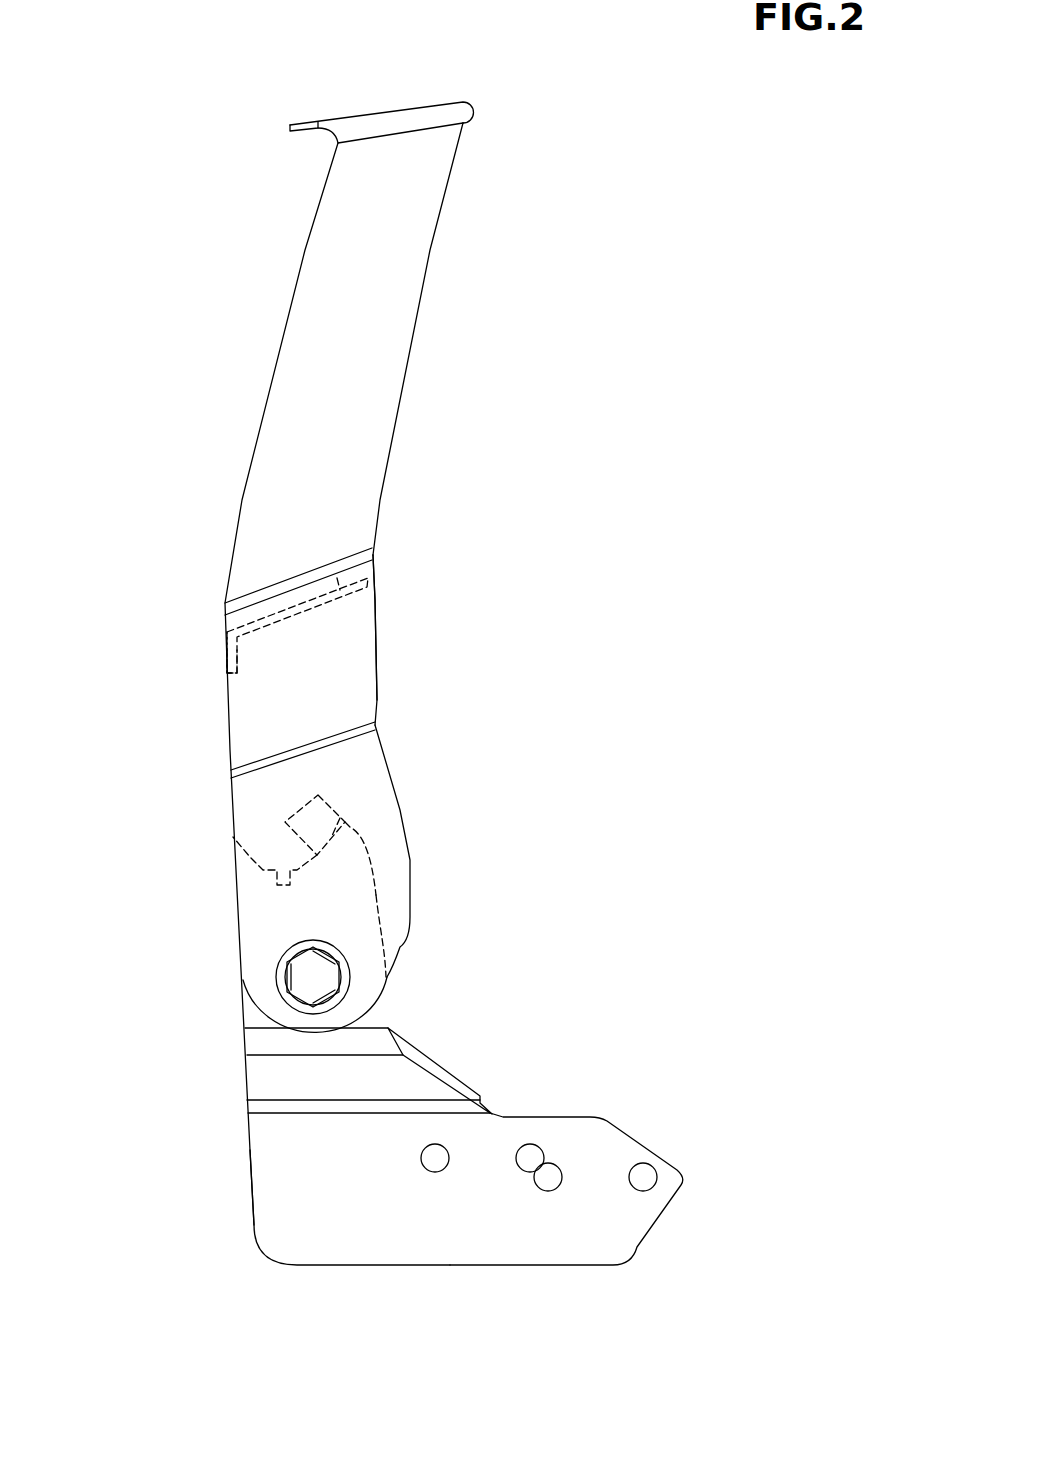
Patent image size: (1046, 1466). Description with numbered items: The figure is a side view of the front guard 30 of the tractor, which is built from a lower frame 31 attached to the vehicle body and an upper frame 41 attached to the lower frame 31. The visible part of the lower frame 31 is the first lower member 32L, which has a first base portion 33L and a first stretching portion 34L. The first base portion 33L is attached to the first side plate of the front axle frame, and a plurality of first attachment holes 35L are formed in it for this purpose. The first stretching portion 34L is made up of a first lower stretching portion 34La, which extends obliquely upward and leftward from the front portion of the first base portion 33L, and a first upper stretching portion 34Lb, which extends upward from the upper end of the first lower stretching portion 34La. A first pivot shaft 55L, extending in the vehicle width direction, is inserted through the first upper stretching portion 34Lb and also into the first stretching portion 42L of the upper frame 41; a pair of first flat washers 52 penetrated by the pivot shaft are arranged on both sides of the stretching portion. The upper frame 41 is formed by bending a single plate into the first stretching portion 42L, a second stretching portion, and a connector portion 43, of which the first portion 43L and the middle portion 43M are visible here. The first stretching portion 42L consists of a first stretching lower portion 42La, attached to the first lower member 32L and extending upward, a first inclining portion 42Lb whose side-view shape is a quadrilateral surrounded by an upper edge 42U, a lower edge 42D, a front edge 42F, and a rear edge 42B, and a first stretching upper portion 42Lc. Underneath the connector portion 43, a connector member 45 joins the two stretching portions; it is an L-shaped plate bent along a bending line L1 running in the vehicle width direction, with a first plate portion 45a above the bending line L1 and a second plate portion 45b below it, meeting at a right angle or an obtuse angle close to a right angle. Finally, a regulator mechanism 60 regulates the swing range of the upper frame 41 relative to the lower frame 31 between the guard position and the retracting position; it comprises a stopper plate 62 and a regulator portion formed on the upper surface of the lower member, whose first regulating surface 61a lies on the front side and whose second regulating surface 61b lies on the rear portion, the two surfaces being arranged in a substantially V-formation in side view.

The front guard 30 is at (533, 209).
The lower frame 31 is at (348, 1284).
The first lower member 32L is at (637, 1138).
The first base portion 33L is at (253, 1177).
The first stretching portion 34L is at (242, 1010).
The first lower stretching portion 34La is at (440, 1070).
The first upper stretching portion 34Lb is at (387, 947).
The first attachment holes 35L is at (435, 1172).
The upper frame 41 is at (250, 332).
The first stretching portion 42L is at (395, 427).
The first stretching lower portion 42La is at (400, 903).
The first inclining portion 42Lb is at (377, 686).
The first stretching upper portion 42Lc is at (415, 321).
The rear edge 42B is at (375, 597).
The lower edge 42D is at (350, 740).
The front edge 42F is at (230, 730).
The upper edge 42U is at (273, 596).
The connector portion 43 is at (432, 100).
The first portion 43L is at (390, 107).
The middle portion 43M is at (288, 128).
The connector member 45 is at (330, 610).
The first plate portion 45a is at (348, 553).
The second plate portion 45b is at (223, 652).
The first flat washers 52 is at (282, 980).
The first pivot shaft 55L is at (308, 972).
The regulator mechanism 60 is at (342, 797).
The first regulating surface 61a is at (235, 836).
The second regulating surface 61b is at (345, 822).
The stopper plate 62 is at (297, 810).
The bending line L1 is at (223, 633).